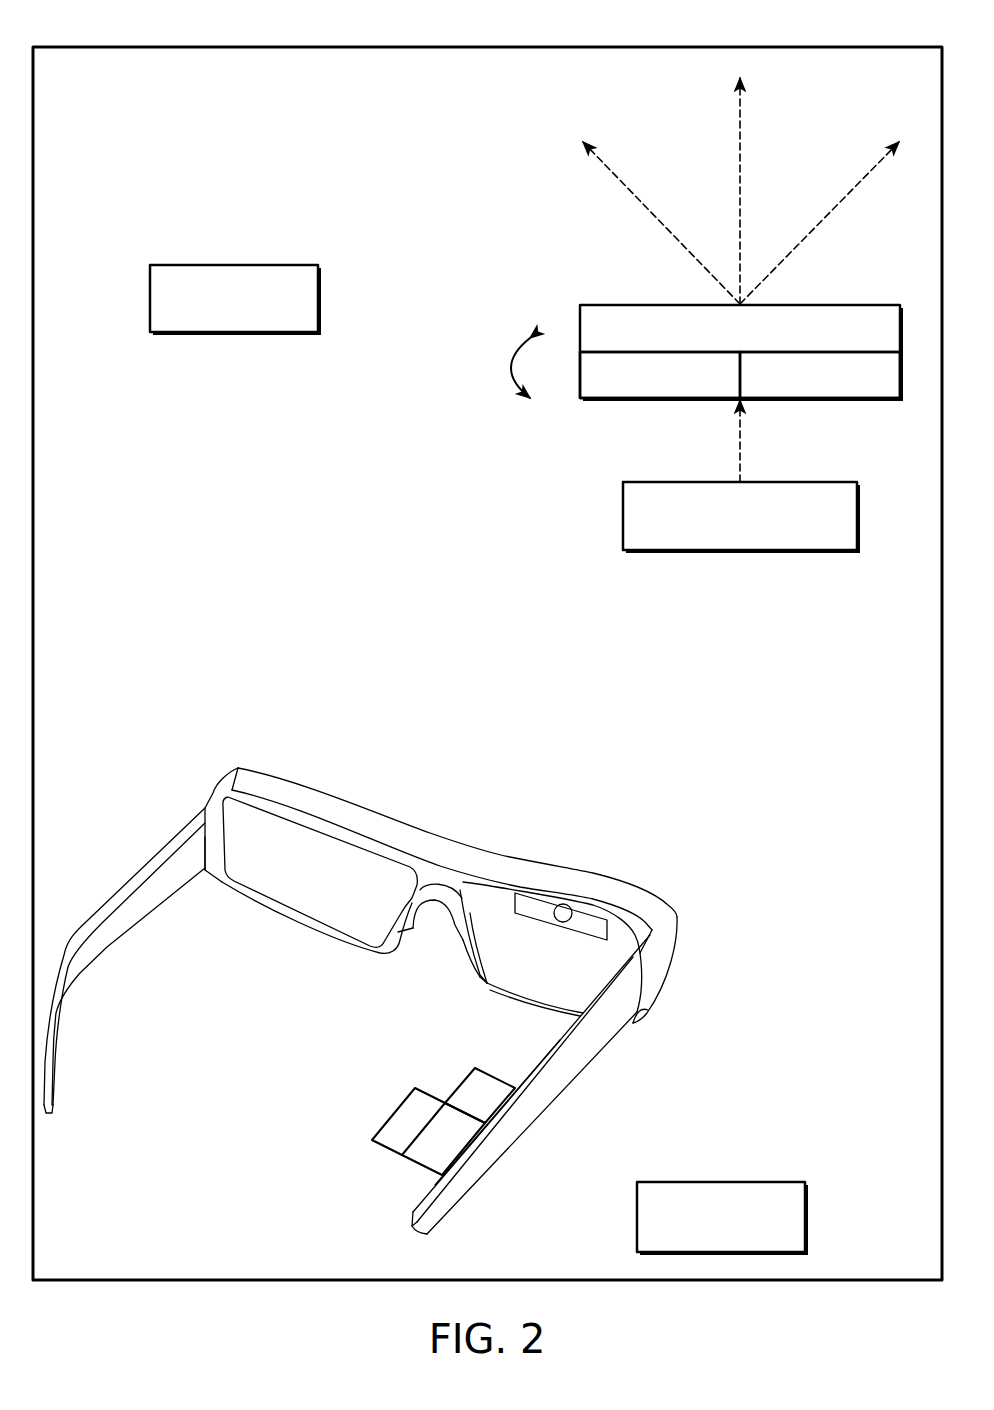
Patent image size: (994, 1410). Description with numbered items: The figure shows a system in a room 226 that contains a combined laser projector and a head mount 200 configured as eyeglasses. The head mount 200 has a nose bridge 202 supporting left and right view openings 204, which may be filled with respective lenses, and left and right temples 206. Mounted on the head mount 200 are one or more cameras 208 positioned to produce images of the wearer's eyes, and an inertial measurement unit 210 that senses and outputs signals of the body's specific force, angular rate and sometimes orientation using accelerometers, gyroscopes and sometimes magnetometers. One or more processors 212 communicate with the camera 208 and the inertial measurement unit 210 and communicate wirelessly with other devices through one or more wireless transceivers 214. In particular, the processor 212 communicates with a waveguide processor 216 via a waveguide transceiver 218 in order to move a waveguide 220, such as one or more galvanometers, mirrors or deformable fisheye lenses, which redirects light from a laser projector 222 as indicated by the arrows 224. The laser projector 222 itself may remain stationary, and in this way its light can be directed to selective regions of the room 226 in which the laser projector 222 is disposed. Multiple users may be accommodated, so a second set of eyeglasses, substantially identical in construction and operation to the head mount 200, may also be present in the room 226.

The head mount 200 is at (426, 1011).
The nose bridge 202 is at (443, 897).
The view openings 204 is at (512, 955).
The temples 206 is at (568, 1060).
The camera 208 is at (565, 904).
The inertial measurement unit 210 is at (453, 1166).
The processor 212 is at (395, 1112).
The wireless transceiver 214 is at (492, 1107).
The waveguide processor 216 is at (815, 399).
The waveguide transceiver 218 is at (660, 399).
The waveguide 220 is at (580, 316).
The laser projector 222 is at (623, 518).
The arrows 224 is at (740, 190).
The room 226 is at (182, 170).